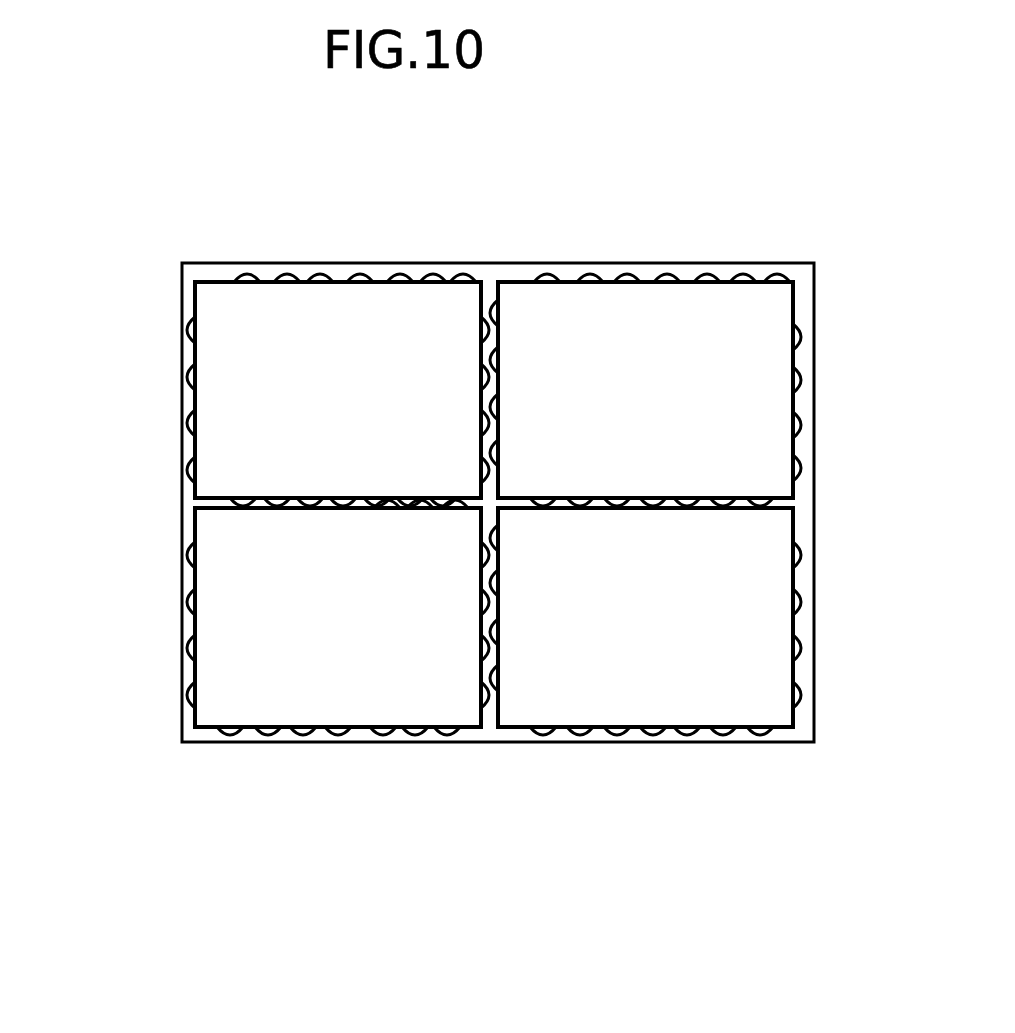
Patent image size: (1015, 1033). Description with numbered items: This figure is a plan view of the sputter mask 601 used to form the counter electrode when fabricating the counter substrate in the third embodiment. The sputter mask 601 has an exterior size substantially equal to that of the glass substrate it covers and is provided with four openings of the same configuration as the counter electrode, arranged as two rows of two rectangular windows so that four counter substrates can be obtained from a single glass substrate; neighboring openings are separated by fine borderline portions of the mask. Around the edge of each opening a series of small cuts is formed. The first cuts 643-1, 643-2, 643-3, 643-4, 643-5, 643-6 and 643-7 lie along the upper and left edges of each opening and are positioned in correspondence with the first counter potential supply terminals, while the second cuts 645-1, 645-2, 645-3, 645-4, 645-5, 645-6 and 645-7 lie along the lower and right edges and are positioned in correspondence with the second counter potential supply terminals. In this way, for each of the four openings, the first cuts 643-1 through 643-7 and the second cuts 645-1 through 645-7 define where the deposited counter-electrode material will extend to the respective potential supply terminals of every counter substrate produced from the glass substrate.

The sputter mask 601 is at (578, 118).
The first cut 643-1 is at (183, 338).
The first cut 643-2 is at (285, 270).
The first cut 643-3 is at (318, 270).
The first cut 643-4 is at (357, 272).
The first cut 643-5 is at (410, 272).
The first cut 643-6 is at (435, 272).
The first cut 643-7 is at (466, 272).
The second cut 645-1 is at (235, 495).
The second cut 645-2 is at (268, 495).
The second cut 645-3 is at (303, 495).
The second cut 645-4 is at (337, 495).
The second cut 645-5 is at (377, 496).
The second cut 645-6 is at (410, 495).
The second cut 645-7 is at (443, 497).